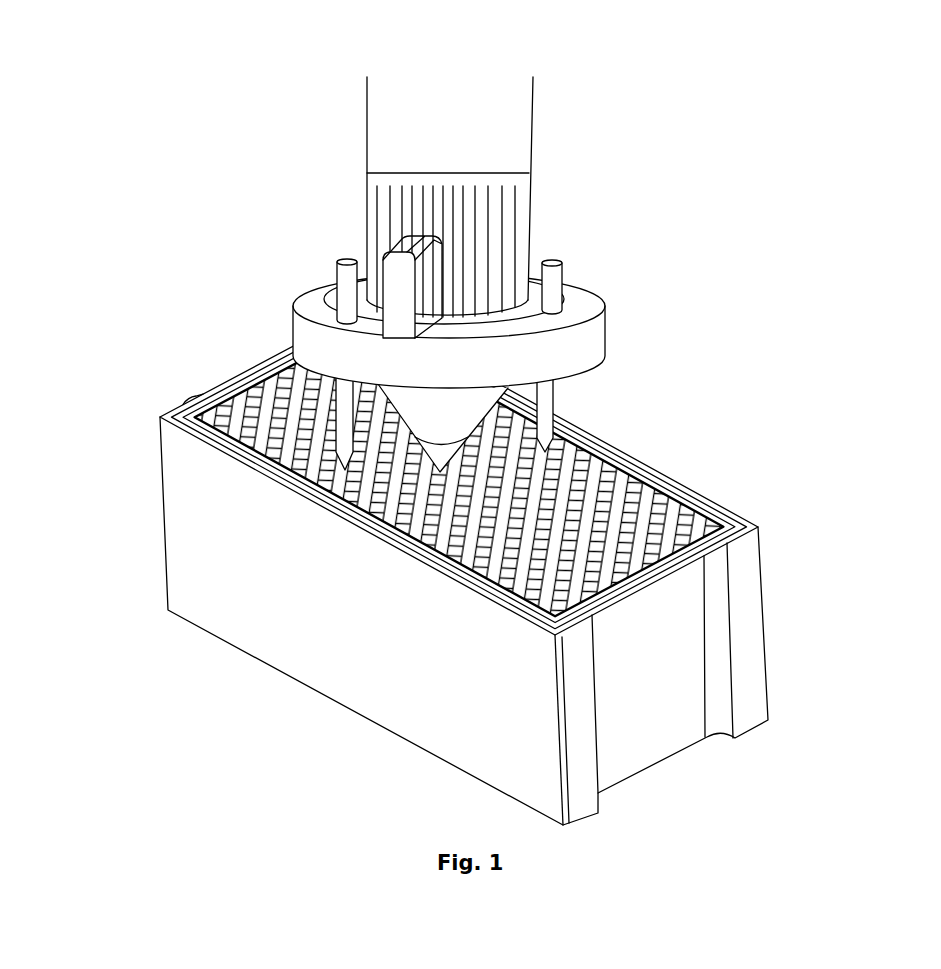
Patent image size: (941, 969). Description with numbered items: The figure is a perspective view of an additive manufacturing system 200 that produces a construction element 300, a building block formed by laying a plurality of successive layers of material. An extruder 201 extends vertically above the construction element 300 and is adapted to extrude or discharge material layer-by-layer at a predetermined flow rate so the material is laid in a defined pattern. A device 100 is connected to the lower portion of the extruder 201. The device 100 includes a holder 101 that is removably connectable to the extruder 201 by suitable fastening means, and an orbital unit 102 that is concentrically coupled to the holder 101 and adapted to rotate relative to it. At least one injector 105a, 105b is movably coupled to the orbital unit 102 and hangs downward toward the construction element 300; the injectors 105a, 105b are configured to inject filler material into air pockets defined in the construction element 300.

The additive manufacturing system 200 is at (504, 423).
The device 100 is at (435, 246).
The extruder 201 is at (533, 105).
The holder 101 is at (528, 212).
The orbital unit 102 is at (621, 320).
The injector 105a is at (558, 425).
The injector 105b is at (328, 405).
The construction element 300 is at (762, 542).